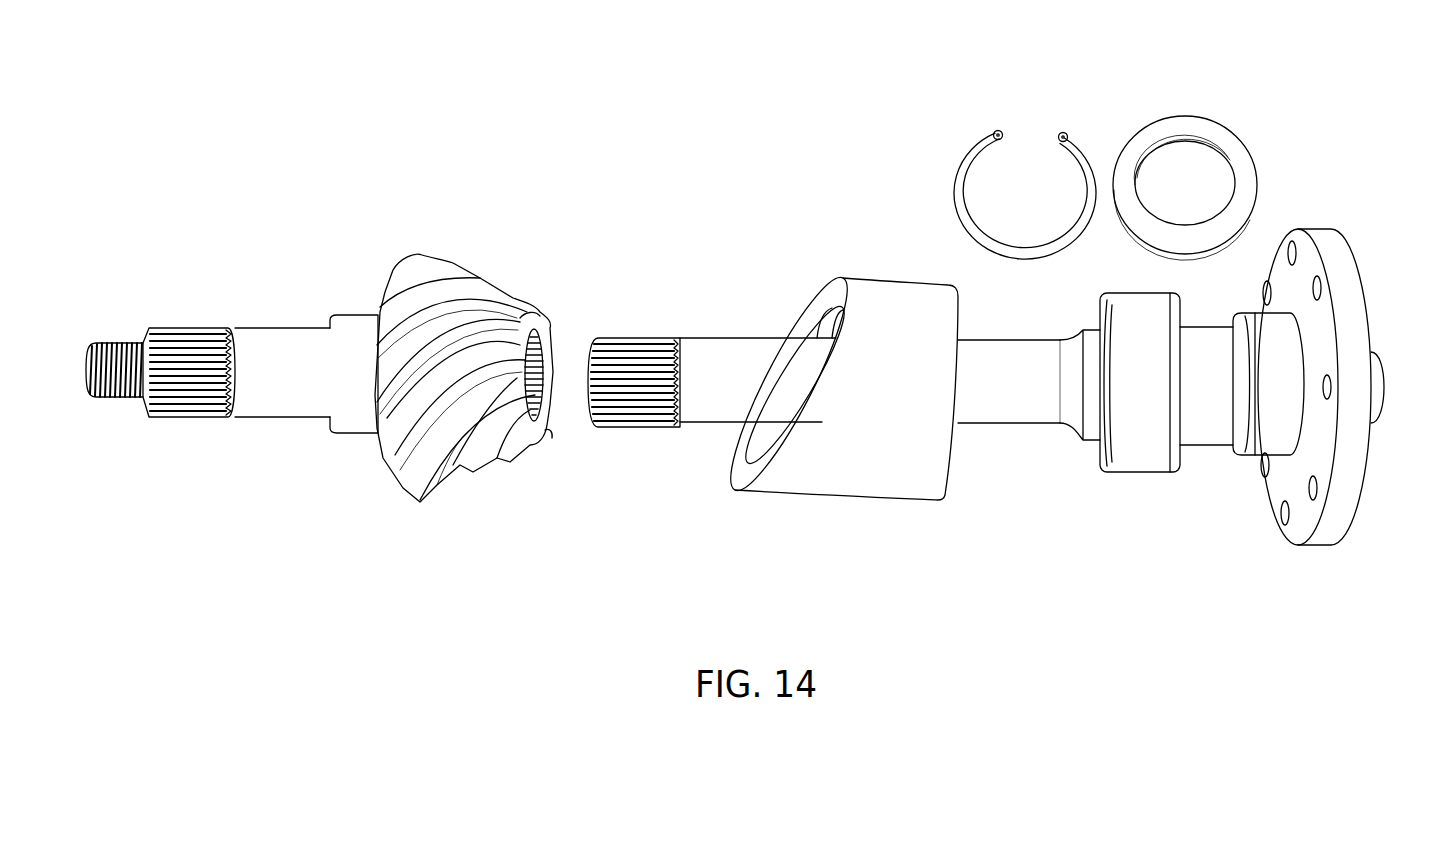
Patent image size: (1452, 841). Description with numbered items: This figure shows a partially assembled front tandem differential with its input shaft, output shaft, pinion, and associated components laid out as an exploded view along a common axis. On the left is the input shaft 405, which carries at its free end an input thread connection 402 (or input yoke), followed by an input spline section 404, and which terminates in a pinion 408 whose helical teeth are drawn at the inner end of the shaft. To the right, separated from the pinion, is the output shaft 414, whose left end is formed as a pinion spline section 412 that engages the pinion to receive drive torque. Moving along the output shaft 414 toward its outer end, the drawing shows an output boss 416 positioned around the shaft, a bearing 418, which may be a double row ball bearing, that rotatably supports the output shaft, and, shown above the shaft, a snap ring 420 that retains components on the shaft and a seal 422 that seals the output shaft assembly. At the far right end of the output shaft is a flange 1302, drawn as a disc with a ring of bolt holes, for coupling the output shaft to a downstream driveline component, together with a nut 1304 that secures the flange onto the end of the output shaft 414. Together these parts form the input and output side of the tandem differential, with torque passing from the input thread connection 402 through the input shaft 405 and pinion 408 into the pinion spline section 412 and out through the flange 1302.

The input thread connection 402 is at (108, 340).
The input spline section 404 is at (190, 332).
The input shaft 405 is at (280, 328).
The pinion 408 is at (477, 277).
The pinion spline section 412 is at (632, 340).
The output shaft 414 is at (713, 338).
The output boss 416 is at (855, 280).
The bearing 418 is at (1142, 473).
The snap ring 420 is at (1062, 137).
The seal 422 is at (1218, 127).
The flange 1302 is at (1323, 227).
The nut 1304 is at (1377, 422).